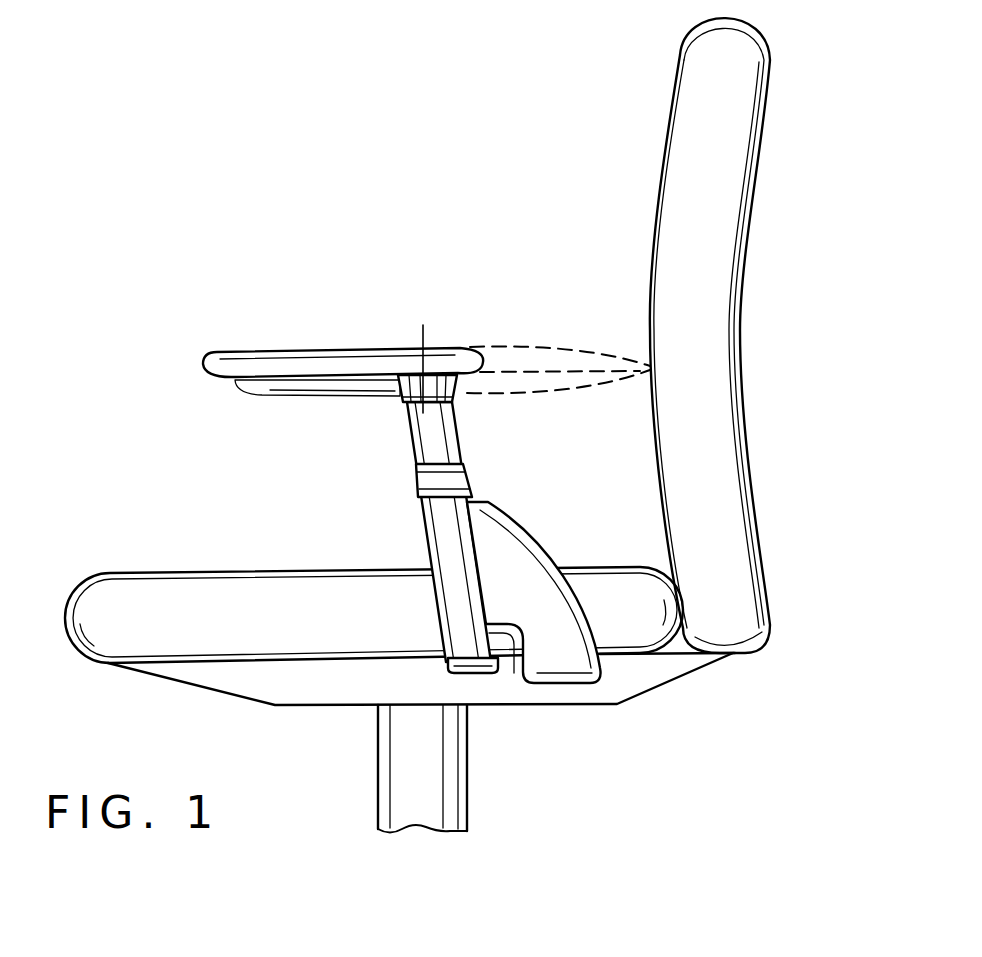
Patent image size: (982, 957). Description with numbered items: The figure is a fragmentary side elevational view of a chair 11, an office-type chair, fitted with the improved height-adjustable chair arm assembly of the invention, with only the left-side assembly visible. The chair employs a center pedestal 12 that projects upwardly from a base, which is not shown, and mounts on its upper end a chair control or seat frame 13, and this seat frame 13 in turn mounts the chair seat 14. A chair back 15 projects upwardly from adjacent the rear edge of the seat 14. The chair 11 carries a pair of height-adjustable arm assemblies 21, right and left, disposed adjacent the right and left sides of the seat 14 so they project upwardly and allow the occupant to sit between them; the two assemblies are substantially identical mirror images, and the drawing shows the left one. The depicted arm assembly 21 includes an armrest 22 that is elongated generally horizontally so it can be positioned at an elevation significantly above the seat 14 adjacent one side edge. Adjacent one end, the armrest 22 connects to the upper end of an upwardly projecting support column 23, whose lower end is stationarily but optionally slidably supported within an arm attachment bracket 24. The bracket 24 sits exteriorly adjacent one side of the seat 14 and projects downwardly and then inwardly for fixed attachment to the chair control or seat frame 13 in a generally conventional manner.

The chair 11 is at (552, 84).
The center pedestal 12 is at (445, 797).
The chair control or seat frame 13 is at (240, 684).
The chair seat 14 is at (177, 592).
The chair back 15 is at (720, 473).
The height-adjustable chair arm assembly 21 is at (437, 332).
The armrest 22 is at (274, 342).
The support column 23 is at (433, 435).
The arm attachment bracket 24 is at (530, 538).